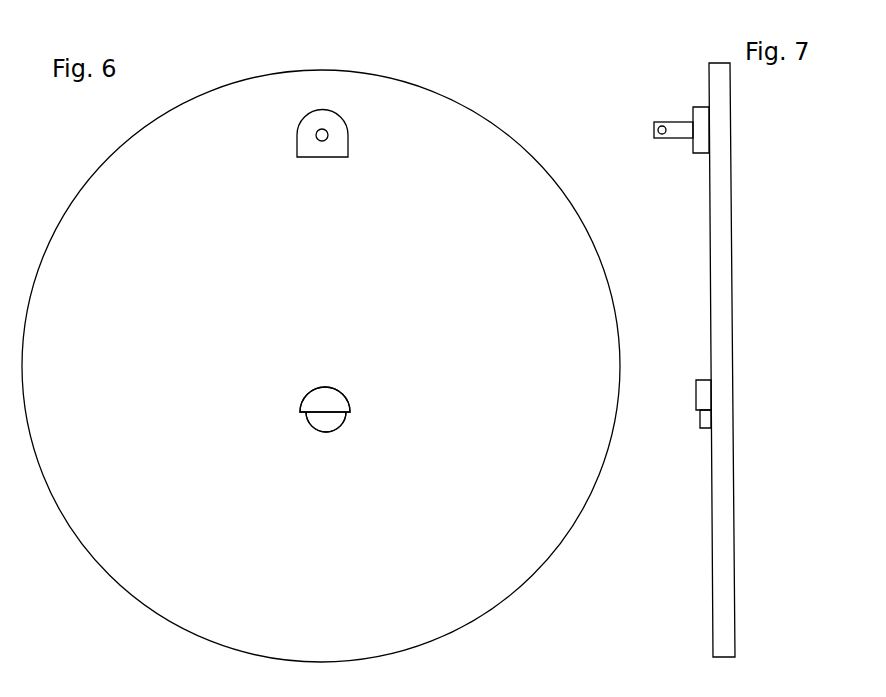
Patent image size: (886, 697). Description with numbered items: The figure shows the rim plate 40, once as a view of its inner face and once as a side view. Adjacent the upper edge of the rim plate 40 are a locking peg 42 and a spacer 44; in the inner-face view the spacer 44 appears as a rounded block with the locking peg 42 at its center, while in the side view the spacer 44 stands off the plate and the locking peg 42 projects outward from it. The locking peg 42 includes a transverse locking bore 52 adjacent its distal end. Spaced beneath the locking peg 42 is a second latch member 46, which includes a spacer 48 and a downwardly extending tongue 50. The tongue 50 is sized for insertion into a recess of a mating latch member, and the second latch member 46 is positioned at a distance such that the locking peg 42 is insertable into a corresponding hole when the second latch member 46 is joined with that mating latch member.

In FIG. 6, the rim plate 40 is at (476, 307).
In FIG. 7, the rim plate 40 is at (719, 298).
In FIG. 6, the locking peg 42 is at (327, 132).
In FIG. 7, the locking peg 42 is at (688, 121).
In FIG. 6, the spacer 44 is at (305, 147).
In FIG. 7, the spacer 44 is at (705, 137).
In FIG. 6, the second latch member 46 is at (307, 374).
In FIG. 6, the spacer 48 is at (327, 402).
In FIG. 7, the spacer 48 is at (703, 388).
In FIG. 6, the downwardly extending tongue 50 is at (328, 420).
In FIG. 7, the downwardly extending tongue 50 is at (702, 416).
In FIG. 7, the transverse locking bore 52 is at (660, 122).